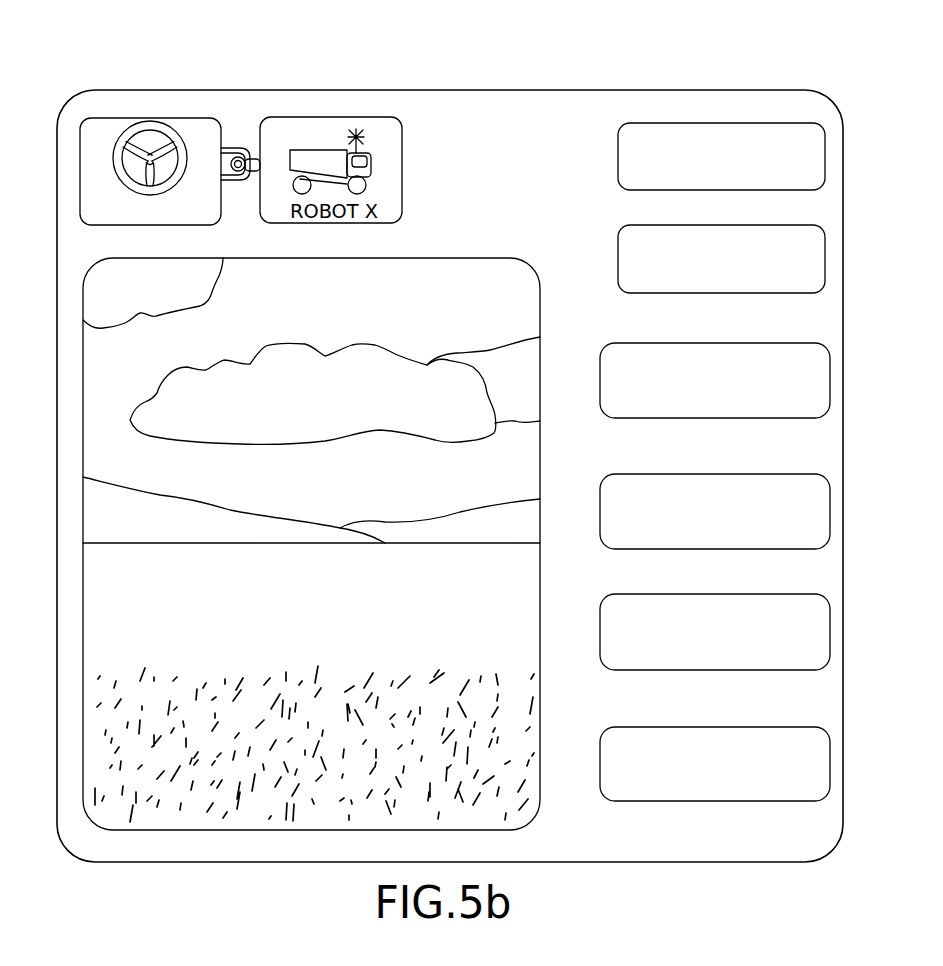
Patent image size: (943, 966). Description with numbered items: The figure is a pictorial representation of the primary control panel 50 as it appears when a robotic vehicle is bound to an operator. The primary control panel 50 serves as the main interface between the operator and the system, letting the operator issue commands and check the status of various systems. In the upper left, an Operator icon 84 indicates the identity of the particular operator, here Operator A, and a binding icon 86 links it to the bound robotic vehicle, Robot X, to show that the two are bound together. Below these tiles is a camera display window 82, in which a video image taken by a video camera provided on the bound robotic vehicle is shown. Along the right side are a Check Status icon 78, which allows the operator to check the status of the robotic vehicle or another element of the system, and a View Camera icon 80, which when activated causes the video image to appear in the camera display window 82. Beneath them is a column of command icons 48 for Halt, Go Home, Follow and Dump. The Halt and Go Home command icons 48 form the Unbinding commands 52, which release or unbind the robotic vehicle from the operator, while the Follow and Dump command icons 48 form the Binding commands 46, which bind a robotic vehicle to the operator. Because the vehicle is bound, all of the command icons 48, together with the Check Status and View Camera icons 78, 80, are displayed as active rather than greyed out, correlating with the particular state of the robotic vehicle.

The primary control panel 50 is at (568, 90).
The Operator icon 84 is at (118, 117).
The binding icon 86 is at (238, 148).
The camera display window 82 is at (436, 258).
The Check Status icon 78 is at (618, 150).
The View Camera icon 80 is at (618, 247).
The command icons 48 is at (695, 343).
The Unbinding commands 52 is at (665, 418).
The Binding commands 46 is at (665, 670).